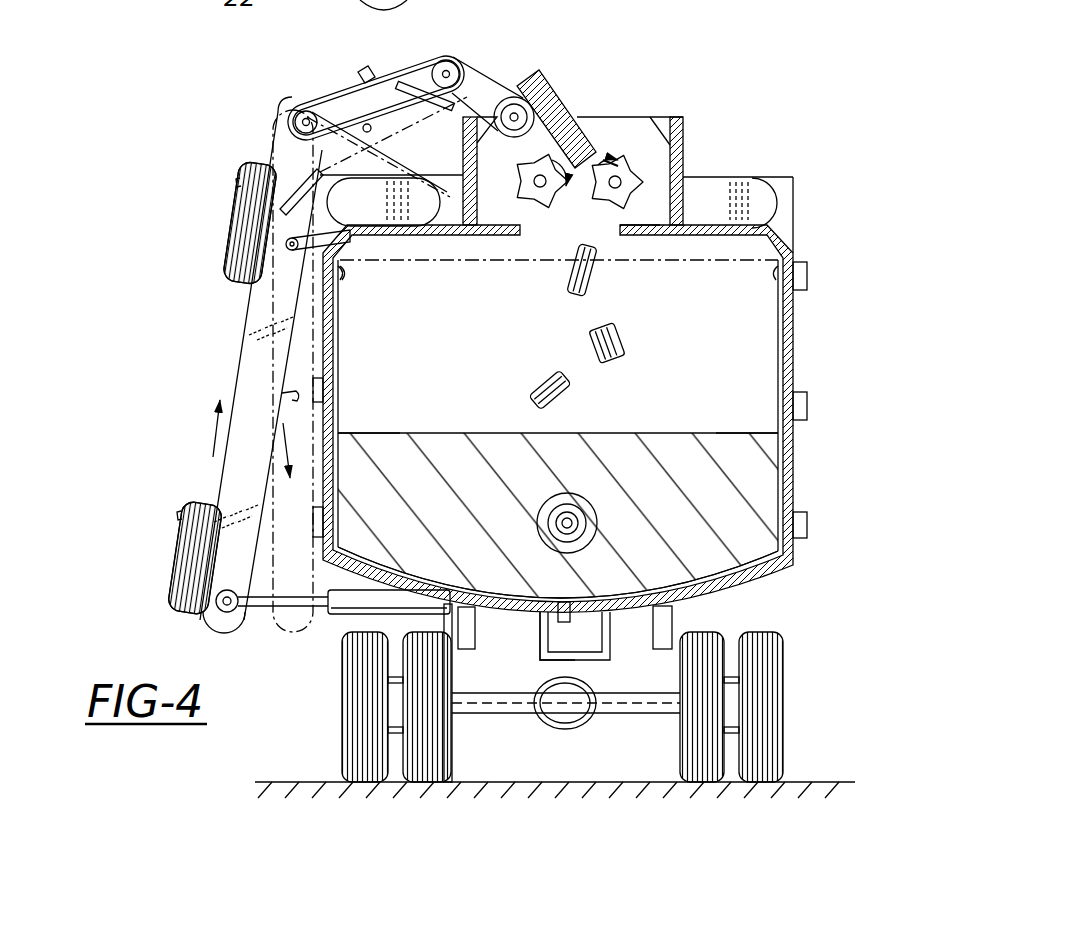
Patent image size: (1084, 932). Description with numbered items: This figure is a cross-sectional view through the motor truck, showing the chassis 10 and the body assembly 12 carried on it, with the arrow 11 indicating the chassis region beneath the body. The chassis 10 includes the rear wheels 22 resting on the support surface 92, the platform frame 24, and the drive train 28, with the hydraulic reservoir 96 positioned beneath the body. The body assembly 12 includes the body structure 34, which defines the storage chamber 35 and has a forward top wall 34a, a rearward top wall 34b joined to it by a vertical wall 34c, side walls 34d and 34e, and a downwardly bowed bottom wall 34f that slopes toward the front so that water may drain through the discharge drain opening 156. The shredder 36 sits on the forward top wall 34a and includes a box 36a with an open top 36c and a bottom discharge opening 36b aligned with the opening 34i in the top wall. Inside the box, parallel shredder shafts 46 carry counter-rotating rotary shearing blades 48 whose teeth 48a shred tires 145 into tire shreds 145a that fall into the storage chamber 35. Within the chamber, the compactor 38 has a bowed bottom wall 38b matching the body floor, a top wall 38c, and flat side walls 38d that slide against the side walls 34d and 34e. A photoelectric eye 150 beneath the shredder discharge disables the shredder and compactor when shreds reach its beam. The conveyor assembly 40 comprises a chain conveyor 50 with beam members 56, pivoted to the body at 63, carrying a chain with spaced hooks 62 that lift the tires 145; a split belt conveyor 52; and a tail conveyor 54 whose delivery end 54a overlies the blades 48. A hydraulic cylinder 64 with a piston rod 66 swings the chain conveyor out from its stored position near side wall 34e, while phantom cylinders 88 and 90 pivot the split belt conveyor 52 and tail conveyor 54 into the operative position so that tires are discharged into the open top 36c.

The chassis 10 is at (178, 308).
The chassis frame 11 is at (522, 723).
The body assembly 12 is at (810, 406).
The rear wheels 22 is at (349, 654).
The platform frame 24 is at (683, 617).
The drive train 28 is at (578, 727).
The body structure 34 is at (796, 328).
The forward top wall 34a is at (777, 210).
The rearward top wall 34b is at (790, 178).
The vertical wall 34c is at (790, 213).
The side wall 34d is at (795, 462).
The side wall 34e is at (335, 400).
The bottom wall 34f is at (624, 588).
The opening 34i is at (534, 230).
The storage chamber 35 is at (370, 360).
The shredder 36 is at (695, 166).
The box 36a is at (688, 126).
The bottom discharge opening 36b is at (620, 222).
The open top 36c is at (662, 116).
The compactor 38 is at (717, 430).
The bowed bottom wall 38b is at (495, 597).
The top wall 38c is at (500, 250).
The side walls 38d is at (335, 421).
The conveyor assembly 40 is at (242, 200).
The shredder shafts 46 is at (641, 157).
The rotary shearing blades 48 is at (640, 210).
The teeth 48a is at (608, 158).
The chain conveyor 50 is at (208, 407).
The split belt conveyor 52 is at (362, 62).
The tail conveyor 54 is at (503, 68).
The delivery end 54a is at (522, 72).
The beam members 56 is at (218, 487).
The hooks 62 is at (182, 516).
The pivot 63 is at (292, 252).
The hydraulic cylinder 64 is at (372, 600).
The piston rod 66 is at (285, 606).
The hydraulic cylinder 88 is at (300, 165).
The hydraulic cylinder 90 is at (419, 58).
The support surface 92 is at (300, 781).
The hydraulic reservoir 96 is at (538, 636).
The tires 145 is at (233, 255).
The tire shreds 145a is at (592, 333).
The photoelectric eye 150 is at (342, 272).
The discharge drain opening 156 is at (585, 625).